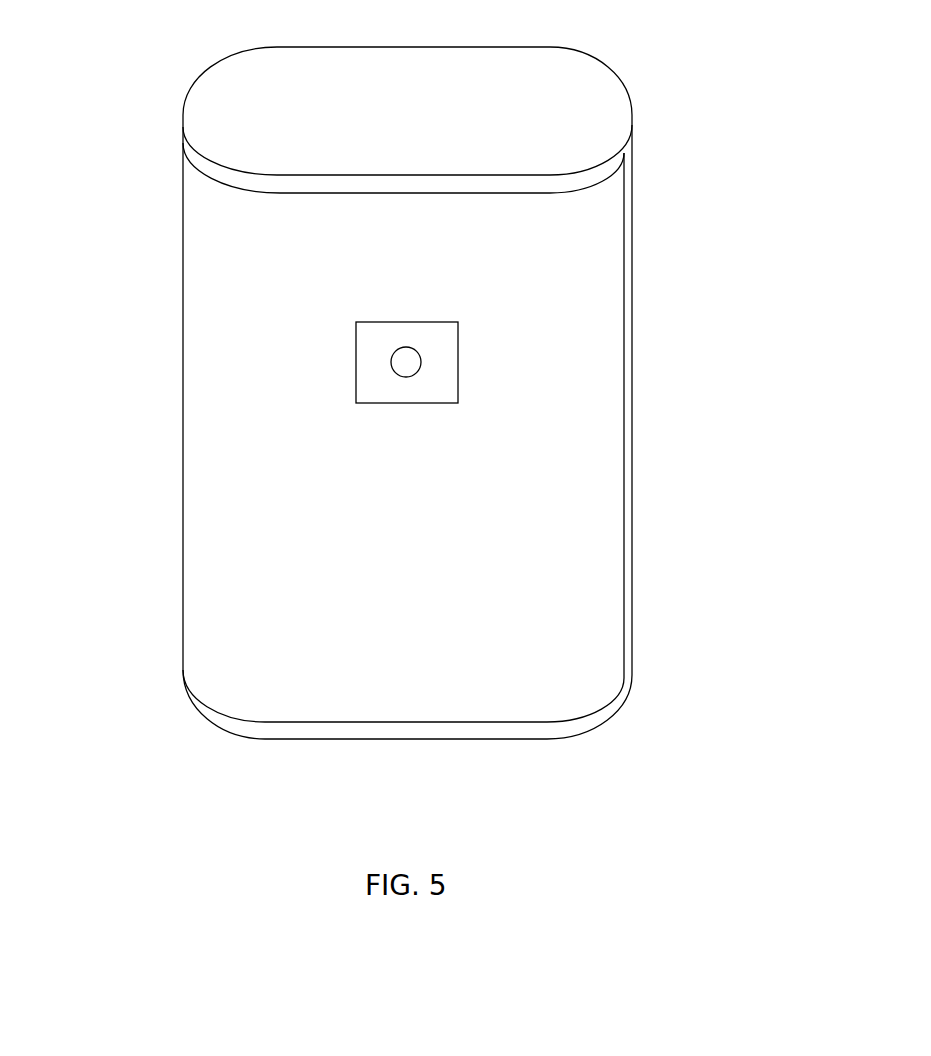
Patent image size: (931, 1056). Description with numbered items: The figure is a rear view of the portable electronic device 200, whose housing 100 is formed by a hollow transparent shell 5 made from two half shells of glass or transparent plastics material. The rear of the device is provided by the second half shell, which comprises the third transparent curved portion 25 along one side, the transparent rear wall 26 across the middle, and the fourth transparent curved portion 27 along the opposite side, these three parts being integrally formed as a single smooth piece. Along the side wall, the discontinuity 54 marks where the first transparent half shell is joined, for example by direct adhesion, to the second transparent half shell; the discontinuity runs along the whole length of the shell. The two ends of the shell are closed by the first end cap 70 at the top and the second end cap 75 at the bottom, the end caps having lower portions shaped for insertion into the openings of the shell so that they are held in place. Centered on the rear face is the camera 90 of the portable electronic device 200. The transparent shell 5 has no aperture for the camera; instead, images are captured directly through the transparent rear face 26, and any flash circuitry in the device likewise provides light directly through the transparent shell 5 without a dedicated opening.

The transparent shell 5 is at (365, 429).
The third transparent curved portion 25 is at (593, 433).
The transparent rear wall 26 is at (401, 442).
The fourth transparent curved portion 27 is at (212, 443).
The discontinuity 54 is at (628, 218).
The first end cap 70 is at (522, 88).
The second end cap 75 is at (330, 785).
The camera 90 is at (492, 331).
The housing 100 is at (104, 672).
The portable electronic device 200 is at (402, 431).